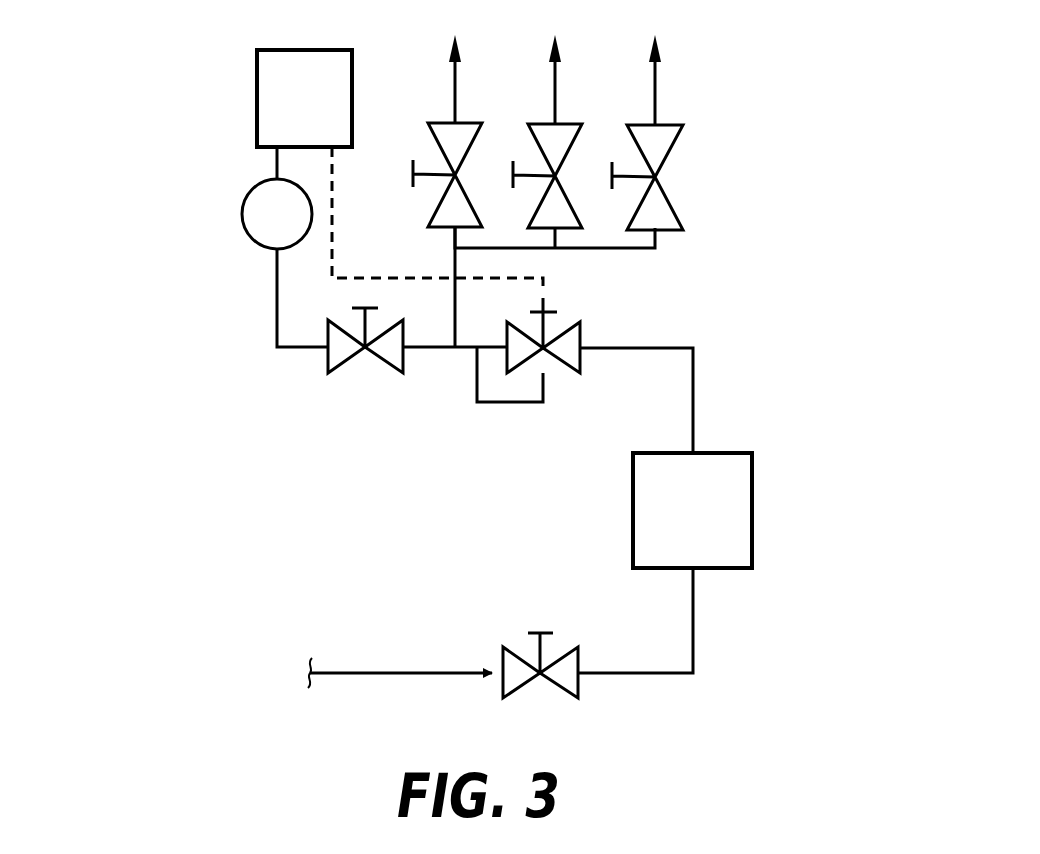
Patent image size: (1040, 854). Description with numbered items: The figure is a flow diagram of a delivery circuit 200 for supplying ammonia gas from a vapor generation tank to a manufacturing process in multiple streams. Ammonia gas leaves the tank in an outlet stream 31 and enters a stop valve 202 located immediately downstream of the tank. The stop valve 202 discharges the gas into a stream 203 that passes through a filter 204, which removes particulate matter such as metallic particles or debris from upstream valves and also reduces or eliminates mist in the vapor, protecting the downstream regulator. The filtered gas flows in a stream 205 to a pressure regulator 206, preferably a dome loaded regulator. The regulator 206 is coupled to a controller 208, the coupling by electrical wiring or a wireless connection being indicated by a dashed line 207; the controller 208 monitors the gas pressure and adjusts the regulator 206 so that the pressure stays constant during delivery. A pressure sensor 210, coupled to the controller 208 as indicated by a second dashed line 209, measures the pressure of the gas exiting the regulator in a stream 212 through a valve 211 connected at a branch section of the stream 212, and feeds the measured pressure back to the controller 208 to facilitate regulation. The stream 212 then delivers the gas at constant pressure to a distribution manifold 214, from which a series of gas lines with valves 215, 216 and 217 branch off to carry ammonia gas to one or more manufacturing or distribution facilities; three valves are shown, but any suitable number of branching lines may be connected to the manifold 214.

The delivery circuit 200 is at (888, 260).
The outlet stream 31 is at (407, 675).
The stop valve 202 is at (517, 683).
The stream 203 is at (648, 675).
The filter 204 is at (717, 527).
The stream 205 is at (693, 393).
The pressure regulator 206 is at (580, 328).
The dashed line 207 is at (332, 230).
The controller 208 is at (328, 113).
The dashed line 209 is at (277, 173).
The pressure sensor 210 is at (252, 237).
The valve 211 is at (348, 363).
The stream 212 is at (440, 350).
The distribution manifold 214 is at (608, 250).
The valve 215 is at (473, 120).
The valve 216 is at (573, 120).
The valve 217 is at (675, 122).